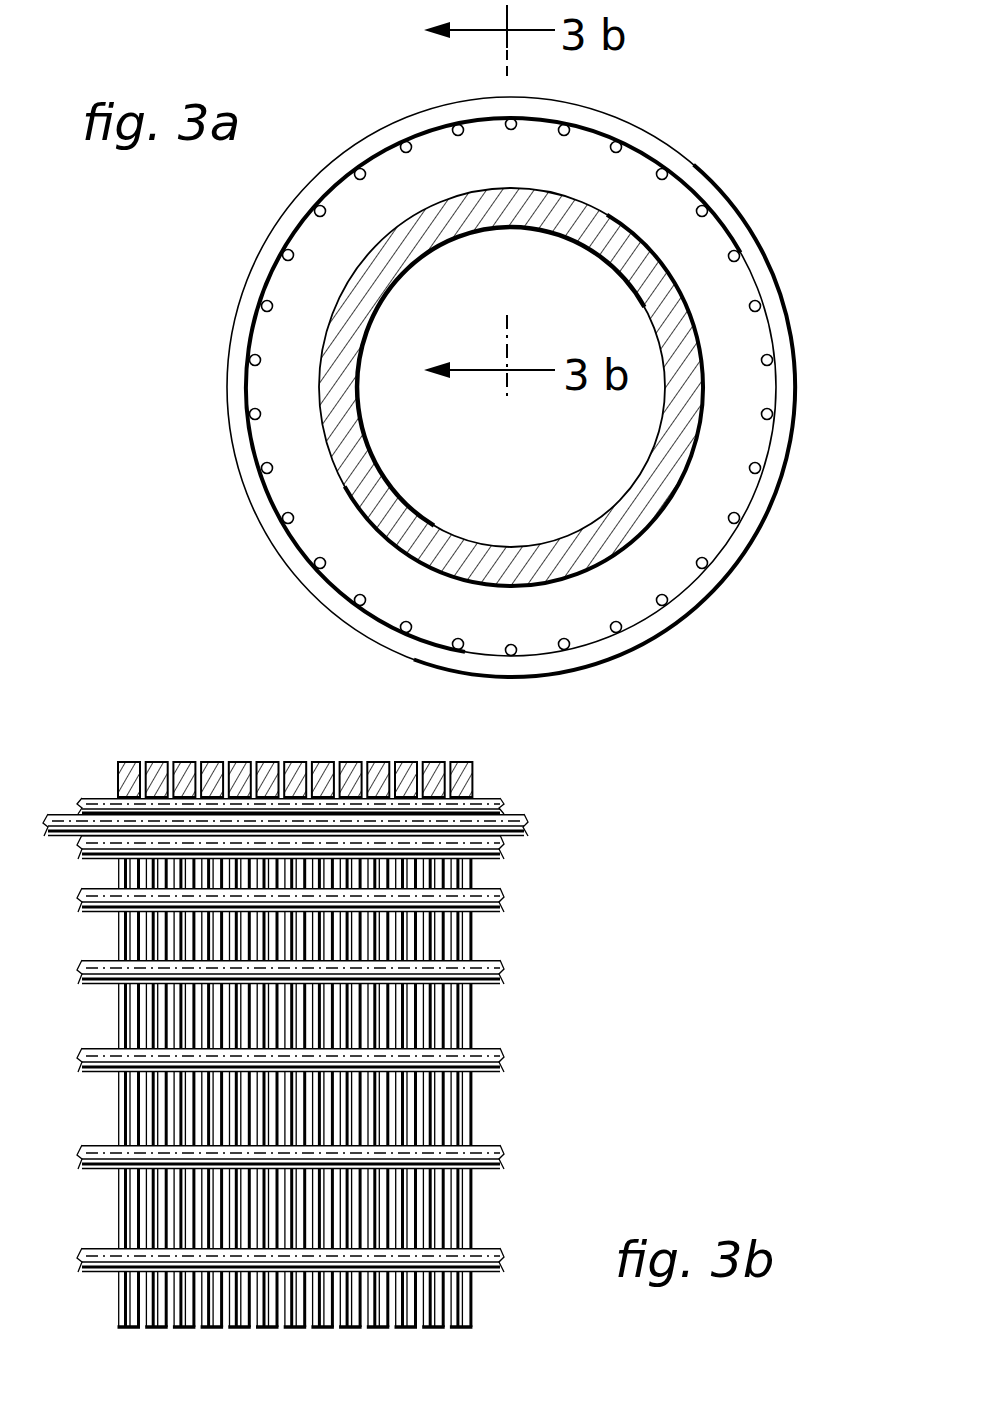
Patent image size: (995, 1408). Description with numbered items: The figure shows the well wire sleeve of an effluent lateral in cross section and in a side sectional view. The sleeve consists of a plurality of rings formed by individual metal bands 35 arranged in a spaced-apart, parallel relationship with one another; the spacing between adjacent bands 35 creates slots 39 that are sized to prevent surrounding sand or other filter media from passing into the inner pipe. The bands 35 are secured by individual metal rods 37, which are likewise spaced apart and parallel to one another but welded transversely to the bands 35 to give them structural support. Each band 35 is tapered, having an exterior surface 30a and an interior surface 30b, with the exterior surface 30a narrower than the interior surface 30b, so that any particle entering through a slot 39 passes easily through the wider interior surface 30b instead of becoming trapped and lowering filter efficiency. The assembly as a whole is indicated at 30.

In FIG. 3A, the fuel rod bundle / tube assembly 30 is at (733, 603).
In FIG. 3B, the exterior surface 30a is at (186, 762).
In FIG. 3B, the interior surface 30b is at (108, 806).
In FIG. 3A, the metal bands 35 is at (688, 162).
In FIG. 3B, the metal bands 35 is at (108, 806).
In FIG. 3A, the metal rods 37 is at (740, 262).
In FIG. 3B, the metal rods 37 is at (492, 896).
In FIG. 3B, the slots 39 is at (452, 762).